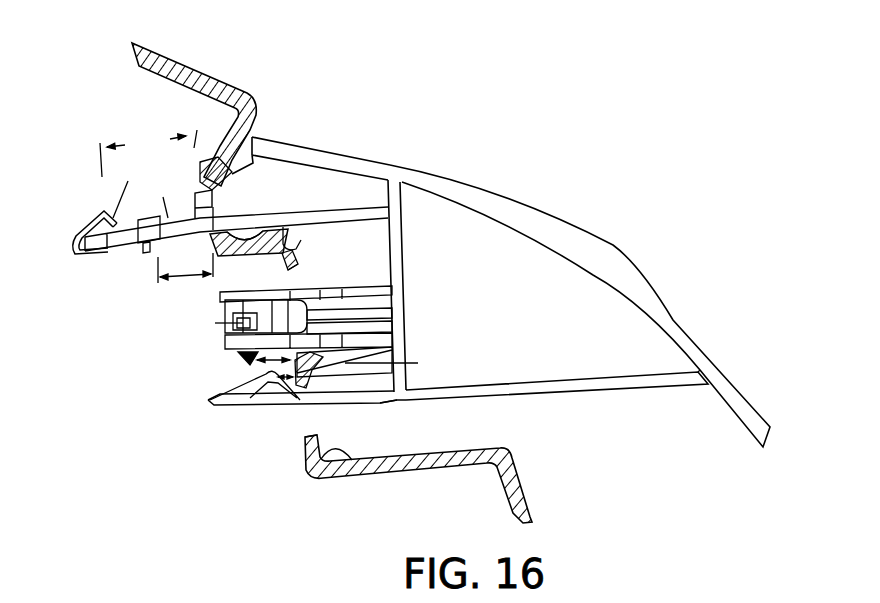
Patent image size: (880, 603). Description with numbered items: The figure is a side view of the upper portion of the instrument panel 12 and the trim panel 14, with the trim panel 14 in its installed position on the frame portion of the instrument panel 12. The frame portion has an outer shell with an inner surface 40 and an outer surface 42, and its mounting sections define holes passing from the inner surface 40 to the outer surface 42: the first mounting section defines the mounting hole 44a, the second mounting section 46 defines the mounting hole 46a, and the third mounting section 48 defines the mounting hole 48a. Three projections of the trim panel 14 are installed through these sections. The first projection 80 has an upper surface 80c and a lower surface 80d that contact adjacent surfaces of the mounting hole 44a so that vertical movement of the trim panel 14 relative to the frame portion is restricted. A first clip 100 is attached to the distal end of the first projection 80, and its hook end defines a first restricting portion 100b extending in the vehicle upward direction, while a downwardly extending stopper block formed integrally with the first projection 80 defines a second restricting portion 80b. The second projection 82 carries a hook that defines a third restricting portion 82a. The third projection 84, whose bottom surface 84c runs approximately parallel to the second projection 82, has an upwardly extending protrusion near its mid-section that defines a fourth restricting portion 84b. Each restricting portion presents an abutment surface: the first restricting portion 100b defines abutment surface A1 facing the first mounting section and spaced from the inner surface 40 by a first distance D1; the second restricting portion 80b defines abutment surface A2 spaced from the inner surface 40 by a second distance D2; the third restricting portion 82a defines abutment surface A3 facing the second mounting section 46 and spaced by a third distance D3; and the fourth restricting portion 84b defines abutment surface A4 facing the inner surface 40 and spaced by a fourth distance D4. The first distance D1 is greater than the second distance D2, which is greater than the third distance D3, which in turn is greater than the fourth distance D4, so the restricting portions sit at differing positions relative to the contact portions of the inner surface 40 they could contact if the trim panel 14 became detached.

The instrument panel 12 is at (205, 62).
The trim panel 14 is at (527, 205).
The inner surface 40 is at (265, 257).
The outer surface 42 is at (304, 236).
The mounting hole 44a is at (213, 207).
The second mounting section 46 is at (300, 266).
The mounting hole 46a is at (298, 268).
The third mounting section 48 is at (353, 463).
The mounting hole 48a is at (312, 435).
The first projection 80 is at (347, 206).
The second restricting portion 80b is at (148, 252).
The upper surface 80c is at (220, 153).
The lower surface 80d is at (250, 237).
The second projection 82 is at (310, 294).
The third restricting portion 82a is at (240, 356).
The third projection 84 is at (222, 413).
The fourth restricting portion 84b is at (273, 380).
The bottom surface 84c is at (383, 404).
The first clip 100 is at (83, 226).
The first restricting portion 100b is at (117, 222).
The first distance D1 is at (148, 150).
The second distance D2 is at (187, 280).
The third distance D3 is at (275, 363).
The fourth distance D4 is at (292, 382).
The abutment surface A1 is at (128, 186).
The abutment surface A2 is at (164, 192).
The abutment surface A3 is at (213, 319).
The abutment surface A4 is at (395, 370).